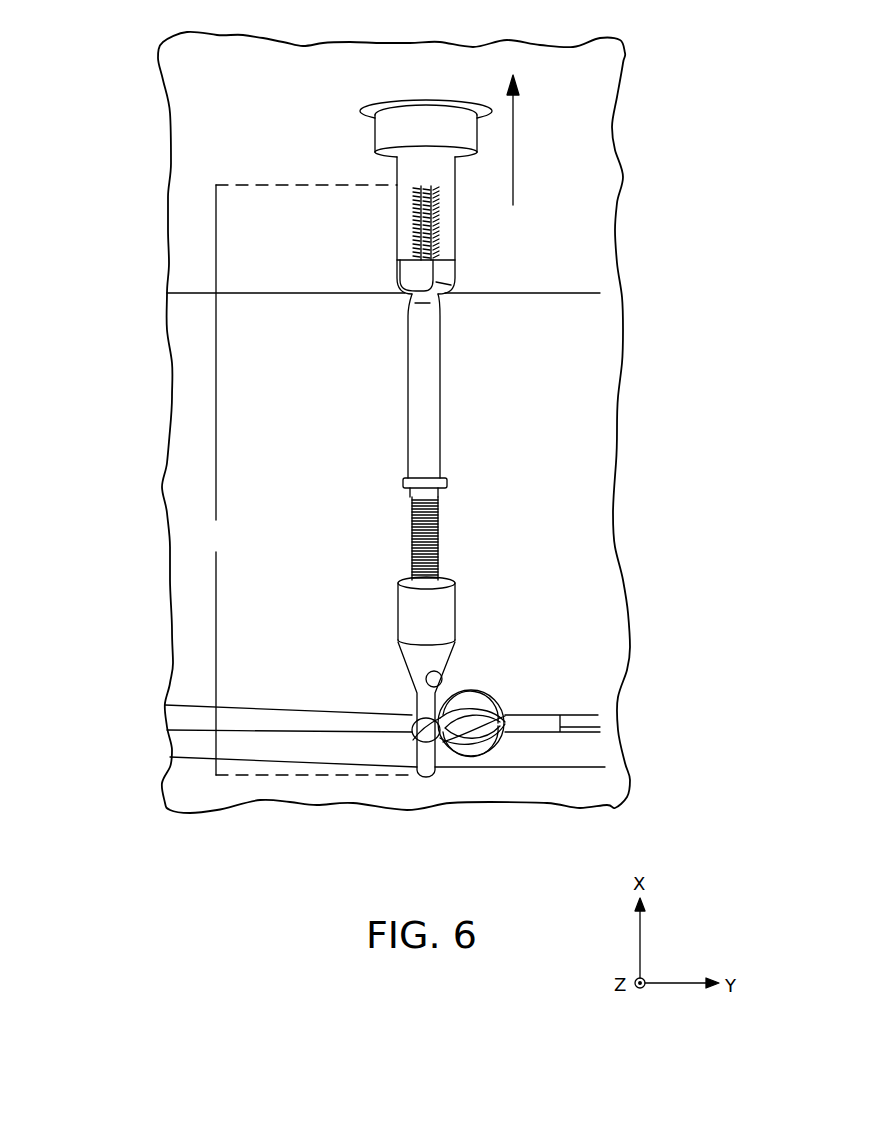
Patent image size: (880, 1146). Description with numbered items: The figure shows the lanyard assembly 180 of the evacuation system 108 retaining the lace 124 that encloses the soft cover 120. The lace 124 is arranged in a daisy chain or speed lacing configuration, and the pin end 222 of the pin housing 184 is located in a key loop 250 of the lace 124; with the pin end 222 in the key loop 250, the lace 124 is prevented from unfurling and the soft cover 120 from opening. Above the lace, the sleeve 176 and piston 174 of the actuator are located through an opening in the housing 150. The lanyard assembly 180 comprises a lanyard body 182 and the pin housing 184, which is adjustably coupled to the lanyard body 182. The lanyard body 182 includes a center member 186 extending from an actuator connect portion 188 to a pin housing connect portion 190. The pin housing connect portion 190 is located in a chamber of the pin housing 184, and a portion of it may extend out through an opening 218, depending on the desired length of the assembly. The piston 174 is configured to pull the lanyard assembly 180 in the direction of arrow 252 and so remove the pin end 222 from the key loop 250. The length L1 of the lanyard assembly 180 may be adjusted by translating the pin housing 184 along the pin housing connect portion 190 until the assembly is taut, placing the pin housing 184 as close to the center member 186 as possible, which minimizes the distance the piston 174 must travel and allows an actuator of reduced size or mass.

The evacuation system 108 is at (143, 95).
The housing 150 is at (262, 102).
The soft cover 120 is at (285, 477).
The length of lanyard assembly L1 is at (310, 480).
The sleeve 176 is at (390, 133).
The piston 174 is at (455, 213).
The actuator connect portion 188 is at (418, 233).
The arrow 252 is at (513, 165).
The lanyard assembly 180 is at (395, 340).
The lanyard body 182 is at (440, 350).
The center member 186 is at (420, 372).
The pin housing connect portion 190 is at (440, 527).
The pin housing 184 is at (452, 618).
The opening 218 is at (450, 677).
The lace 124 is at (318, 720).
The key loop 250 is at (417, 735).
The pin end 222 is at (428, 755).